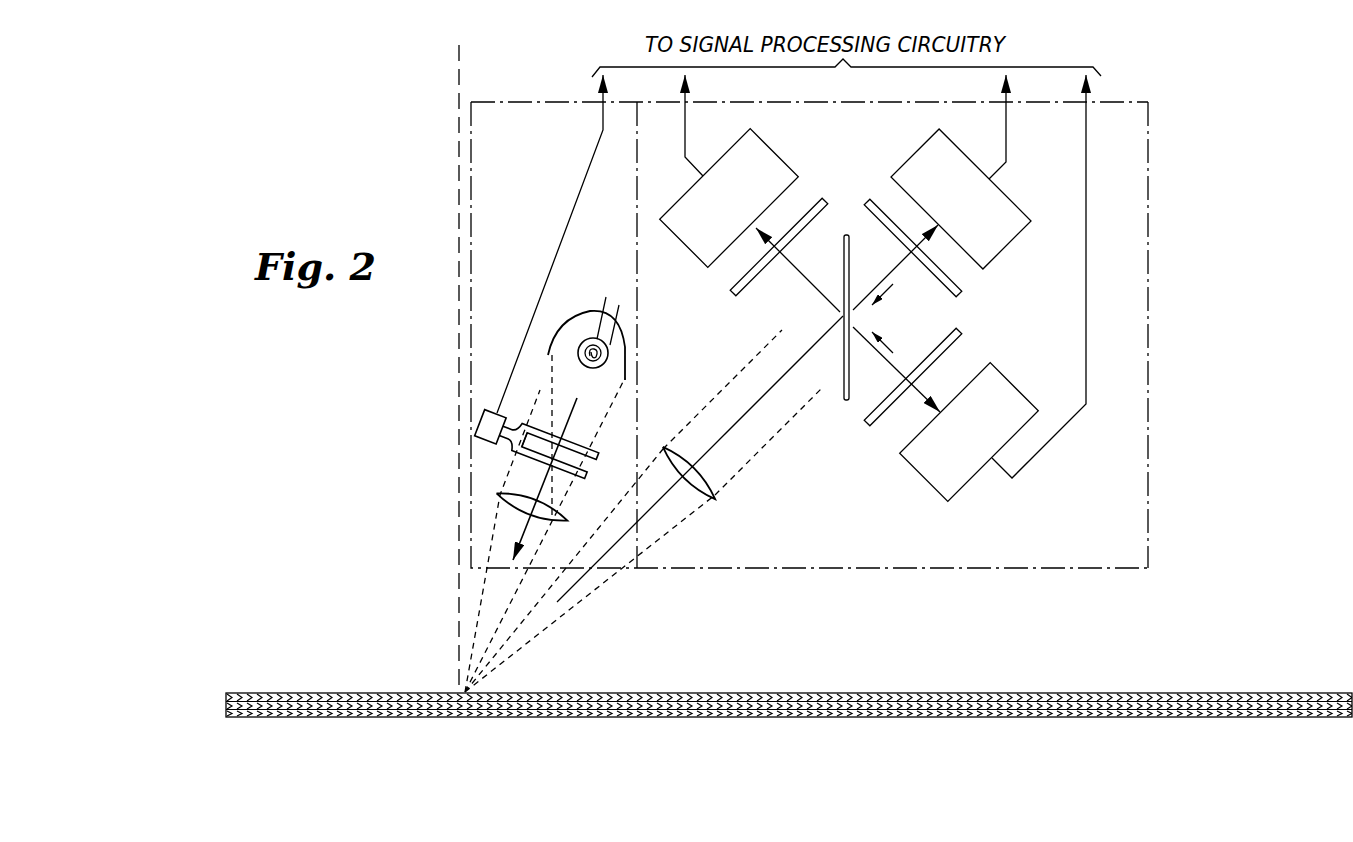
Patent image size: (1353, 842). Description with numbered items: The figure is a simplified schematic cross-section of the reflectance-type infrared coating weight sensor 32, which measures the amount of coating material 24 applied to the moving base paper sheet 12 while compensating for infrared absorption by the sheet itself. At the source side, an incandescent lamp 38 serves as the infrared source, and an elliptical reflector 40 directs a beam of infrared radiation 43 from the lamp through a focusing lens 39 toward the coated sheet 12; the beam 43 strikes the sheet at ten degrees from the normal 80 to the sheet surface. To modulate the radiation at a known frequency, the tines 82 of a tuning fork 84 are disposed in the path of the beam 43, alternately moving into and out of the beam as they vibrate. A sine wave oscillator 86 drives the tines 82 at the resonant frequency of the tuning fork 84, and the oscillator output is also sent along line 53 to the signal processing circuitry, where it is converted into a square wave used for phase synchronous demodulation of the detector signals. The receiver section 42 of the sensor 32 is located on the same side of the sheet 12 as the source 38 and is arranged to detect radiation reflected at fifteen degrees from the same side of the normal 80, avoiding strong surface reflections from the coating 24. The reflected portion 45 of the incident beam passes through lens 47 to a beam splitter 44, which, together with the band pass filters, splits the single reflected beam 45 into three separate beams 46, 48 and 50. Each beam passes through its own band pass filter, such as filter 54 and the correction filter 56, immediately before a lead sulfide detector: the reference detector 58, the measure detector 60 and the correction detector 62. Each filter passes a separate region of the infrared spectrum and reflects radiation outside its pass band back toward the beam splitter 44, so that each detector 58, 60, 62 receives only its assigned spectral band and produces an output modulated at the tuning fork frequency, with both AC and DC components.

The base paper sheet 12 is at (938, 692).
The coating material 24 is at (1100, 711).
The infrared coating weight sensor 32 is at (1152, 567).
The incandescent lamp 38 is at (580, 343).
The focusing lens 39 is at (505, 519).
The elliptical reflector 40 is at (591, 313).
The receiver section 42 is at (1123, 164).
The infrared beam 43 is at (522, 537).
The beam splitter 44 is at (843, 233).
The reflected beam 45 is at (735, 428).
The first split beam 46 is at (905, 372).
The lens 47 is at (714, 490).
The second split beam 48 is at (898, 265).
The third split beam 50 is at (816, 294).
The line 53 is at (576, 200).
The band pass filter 54 is at (962, 292).
The correction band pass filter 56 is at (733, 293).
The reference detector 58 is at (933, 487).
The measure detector 60 is at (1013, 204).
The correction detector 62 is at (757, 135).
The normal 80 is at (464, 132).
The tines 82 is at (599, 466).
The tuning fork 84 is at (518, 447).
The sine wave oscillator 86 is at (478, 429).